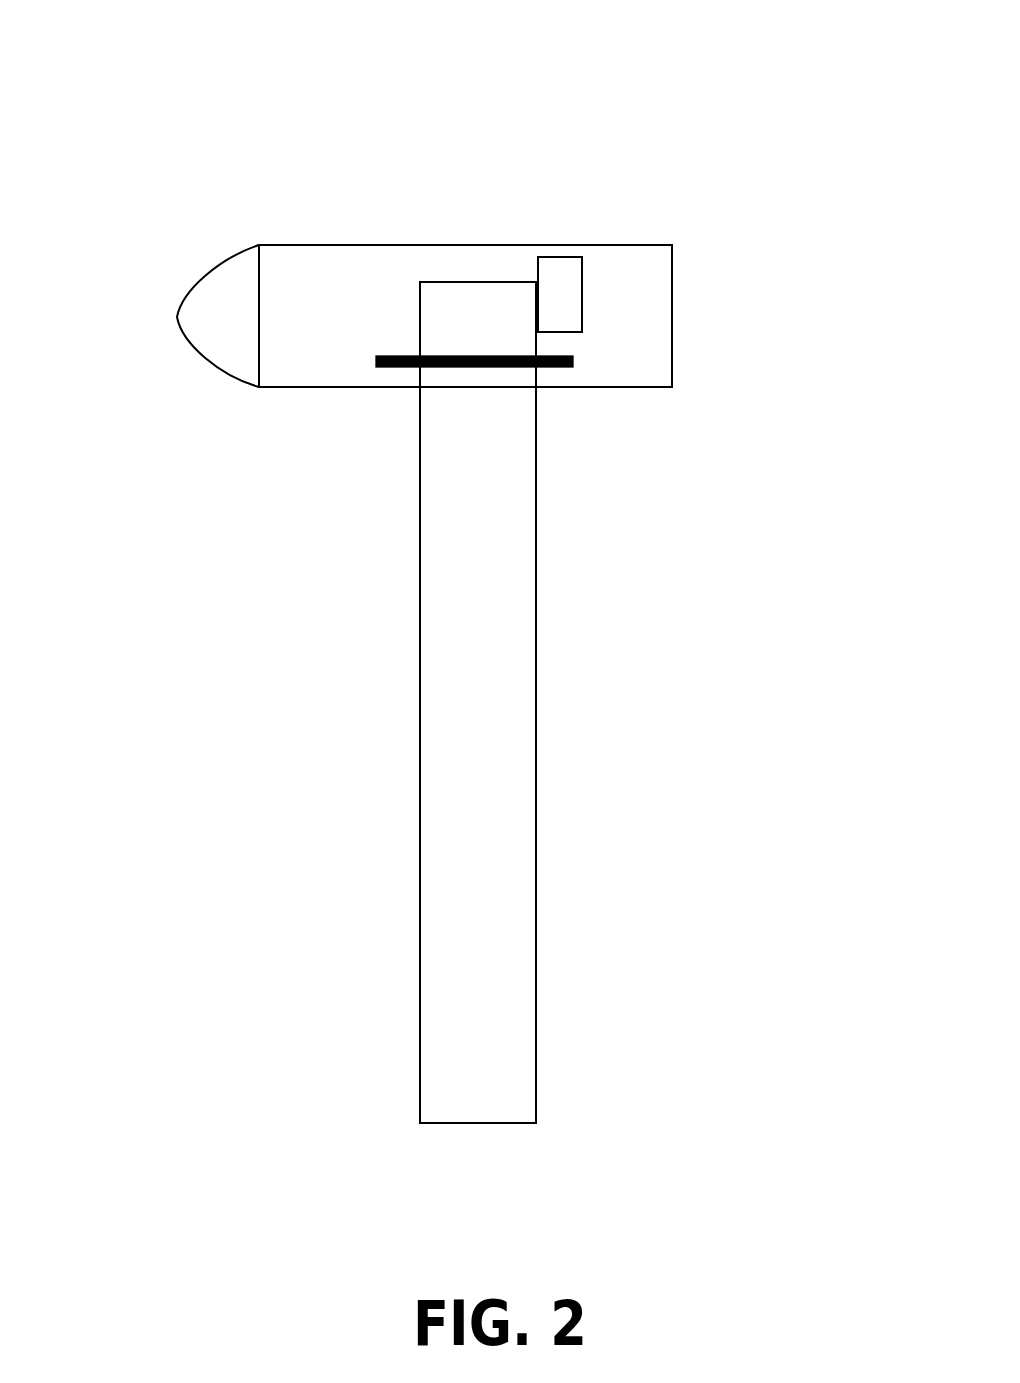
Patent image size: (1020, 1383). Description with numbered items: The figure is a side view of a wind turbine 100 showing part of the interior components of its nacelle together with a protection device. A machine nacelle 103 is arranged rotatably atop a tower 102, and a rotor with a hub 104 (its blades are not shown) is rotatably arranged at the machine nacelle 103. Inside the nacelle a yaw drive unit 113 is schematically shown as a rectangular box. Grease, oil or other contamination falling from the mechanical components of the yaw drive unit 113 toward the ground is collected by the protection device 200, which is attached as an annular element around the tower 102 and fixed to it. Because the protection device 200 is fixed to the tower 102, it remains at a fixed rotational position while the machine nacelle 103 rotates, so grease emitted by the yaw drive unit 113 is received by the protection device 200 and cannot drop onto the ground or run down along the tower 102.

The wind turbine 100 is at (268, 103).
The tower 102 is at (536, 702).
The machine nacelle 103 is at (672, 317).
The hub 104 is at (202, 310).
The yaw drive unit 113 is at (554, 276).
The protection device 200 is at (550, 368).